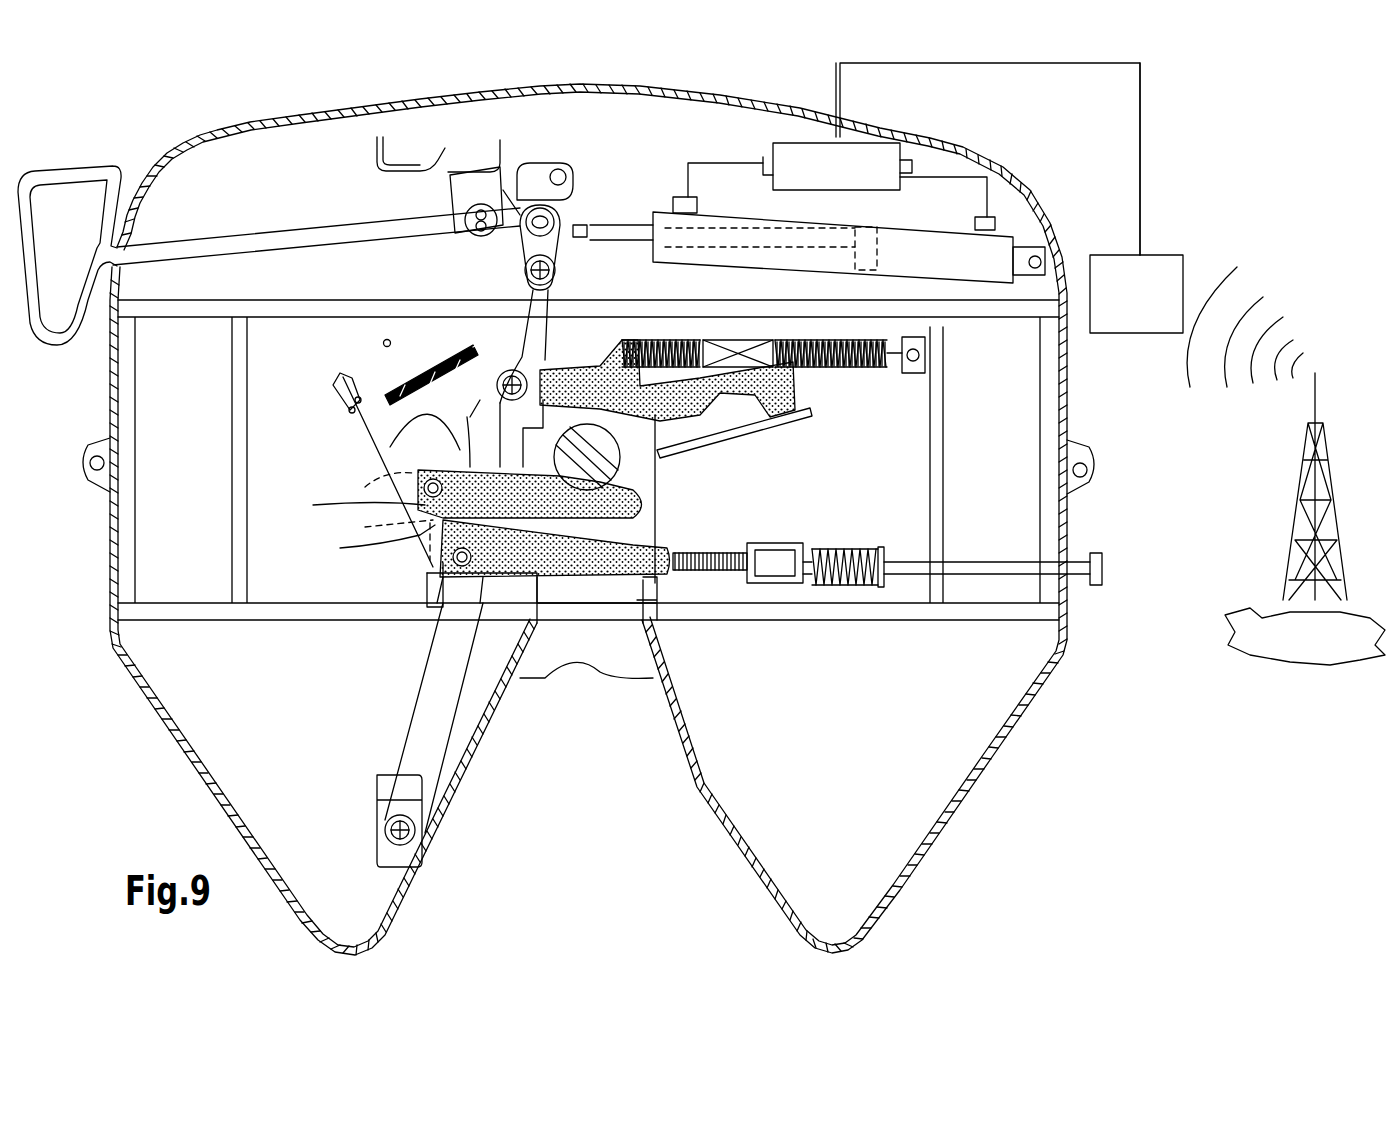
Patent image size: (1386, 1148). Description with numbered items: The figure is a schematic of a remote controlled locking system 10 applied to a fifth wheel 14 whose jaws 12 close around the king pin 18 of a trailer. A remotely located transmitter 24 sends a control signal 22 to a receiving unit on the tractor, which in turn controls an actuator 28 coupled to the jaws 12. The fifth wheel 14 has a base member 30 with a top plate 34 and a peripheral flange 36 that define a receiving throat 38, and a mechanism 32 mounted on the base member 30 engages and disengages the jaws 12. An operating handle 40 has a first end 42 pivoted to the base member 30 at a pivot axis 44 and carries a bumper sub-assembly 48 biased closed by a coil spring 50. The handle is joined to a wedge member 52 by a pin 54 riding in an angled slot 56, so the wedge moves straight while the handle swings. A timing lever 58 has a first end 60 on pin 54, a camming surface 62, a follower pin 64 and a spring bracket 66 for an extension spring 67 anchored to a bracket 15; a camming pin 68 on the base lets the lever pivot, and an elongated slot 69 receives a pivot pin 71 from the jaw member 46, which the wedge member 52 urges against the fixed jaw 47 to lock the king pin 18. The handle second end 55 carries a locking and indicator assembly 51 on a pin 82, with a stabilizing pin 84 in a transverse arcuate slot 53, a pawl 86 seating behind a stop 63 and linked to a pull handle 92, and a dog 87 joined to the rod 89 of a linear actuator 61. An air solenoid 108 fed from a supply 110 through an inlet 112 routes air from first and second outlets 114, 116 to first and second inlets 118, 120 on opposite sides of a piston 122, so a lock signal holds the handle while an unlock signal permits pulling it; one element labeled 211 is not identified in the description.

The remote controlled locking system 10 is at (383, 82).
The jaws 12 is at (668, 503).
The fifth wheel 14 is at (1018, 128).
The bracket 15 is at (465, 400).
The king pin 18 is at (620, 460).
The control signal 22 is at (1290, 288).
The transmitter 24 is at (1295, 560).
The actuator 28 is at (760, 128).
The base member 30 is at (332, 108).
The mechanism 32 is at (592, 150).
The top plate 34 is at (500, 105).
The peripheral flange 36 is at (420, 880).
The receiving throat 38 is at (612, 640).
The operating handle 40 is at (432, 720).
The first end 42 is at (415, 820).
The pivot axis 44 is at (378, 845).
The jaw member 46 is at (640, 520).
The fixed jaw 47 is at (700, 418).
The bumper sub-assembly 48 is at (805, 378).
The coil spring 50 is at (870, 340).
The locking and indicator assembly 51 is at (535, 165).
The wedge member 52 is at (650, 620).
The transverse arcuate slot 53 is at (548, 218).
The pin 54 is at (430, 577).
The second end 55 is at (525, 300).
The slot 56 is at (380, 536).
The timing lever 58 is at (390, 447).
The first end 60 is at (370, 541).
The linear actuator 61 is at (890, 270).
The camming surface 62 is at (345, 375).
The stop 63 is at (415, 158).
The follower pin 64 is at (355, 400).
The spring bracket 66 is at (350, 412).
The extension spring 67 is at (410, 385).
The camming pin 68 is at (385, 342).
The elongated slot 69 is at (367, 487).
The pivot pin 71 is at (352, 505).
The pin 82 is at (555, 272).
The stabilizing pin 84 is at (538, 212).
The pawl 86 is at (455, 200).
The dog 87 is at (582, 225).
The rod 89 is at (632, 240).
The pull handle 92 is at (93, 166).
The air solenoid 108 is at (873, 143).
The supply 110 is at (1150, 255).
The inlet 112 is at (842, 125).
The first outlet 114 is at (766, 160).
The second outlet 116 is at (910, 160).
The first inlet 118 is at (700, 200).
The second inlet 120 is at (972, 215).
The piston 122 is at (850, 225).
The arm 211 is at (480, 433).